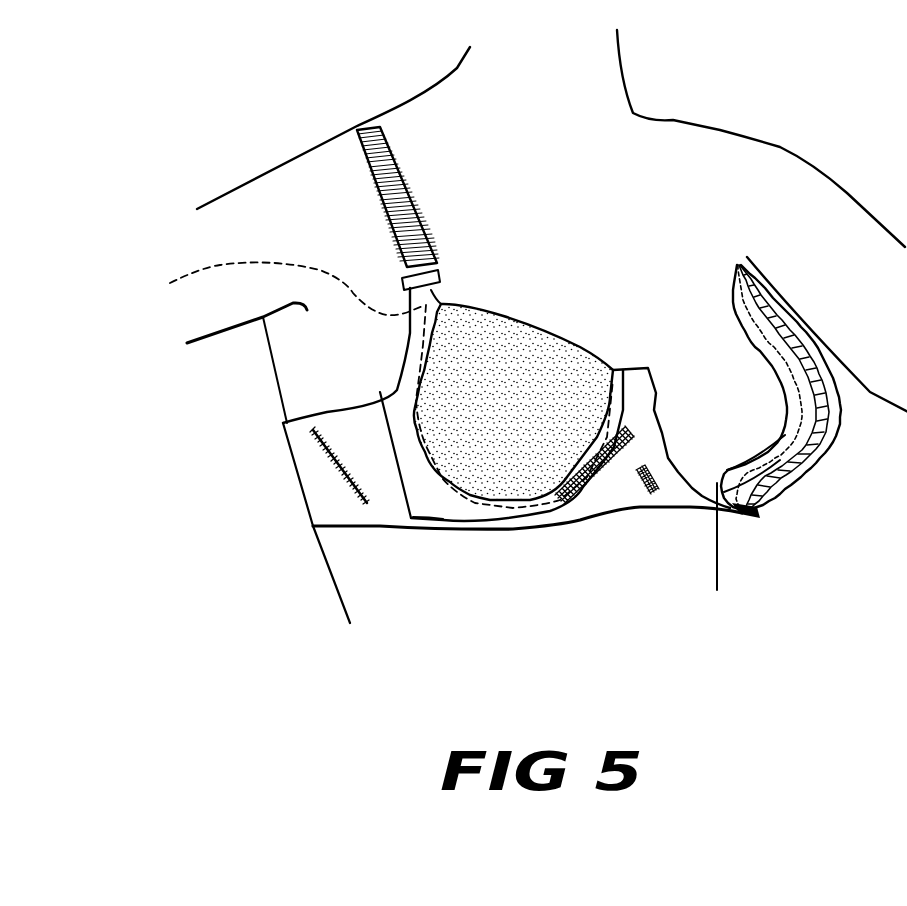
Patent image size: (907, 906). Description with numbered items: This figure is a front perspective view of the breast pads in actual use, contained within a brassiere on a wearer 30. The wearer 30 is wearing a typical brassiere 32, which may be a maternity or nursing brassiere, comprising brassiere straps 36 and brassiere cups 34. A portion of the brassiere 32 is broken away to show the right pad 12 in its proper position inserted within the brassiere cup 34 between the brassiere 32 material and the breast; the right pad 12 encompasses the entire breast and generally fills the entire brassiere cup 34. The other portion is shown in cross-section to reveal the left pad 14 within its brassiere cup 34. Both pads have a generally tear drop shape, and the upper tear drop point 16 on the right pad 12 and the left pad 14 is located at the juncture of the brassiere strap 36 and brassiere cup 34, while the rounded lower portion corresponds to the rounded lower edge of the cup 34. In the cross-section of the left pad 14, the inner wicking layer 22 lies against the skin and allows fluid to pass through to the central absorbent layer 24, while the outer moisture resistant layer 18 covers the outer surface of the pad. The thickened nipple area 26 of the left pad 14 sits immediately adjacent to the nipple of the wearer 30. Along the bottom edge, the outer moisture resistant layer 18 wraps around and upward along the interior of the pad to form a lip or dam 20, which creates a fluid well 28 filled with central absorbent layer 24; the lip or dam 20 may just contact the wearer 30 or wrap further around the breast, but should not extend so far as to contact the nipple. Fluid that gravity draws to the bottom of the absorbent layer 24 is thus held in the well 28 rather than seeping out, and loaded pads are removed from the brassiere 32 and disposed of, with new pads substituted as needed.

The right pad 12 is at (463, 255).
The left pad 14 is at (697, 237).
The upper tear drop point 16 is at (277, 288).
The outer moisture resistant layer 18 is at (460, 463).
The lip or dam 20 is at (717, 490).
The inner wicking layer 22 is at (730, 290).
The central absorbent layer 24 is at (763, 347).
The thickened nipple area 26 is at (803, 483).
The fluid well 28 is at (775, 503).
The wearer 30 is at (258, 190).
The brassiere 32 is at (310, 470).
The brassiere cup 34 is at (440, 512).
The brassiere strap 36 is at (690, 105).